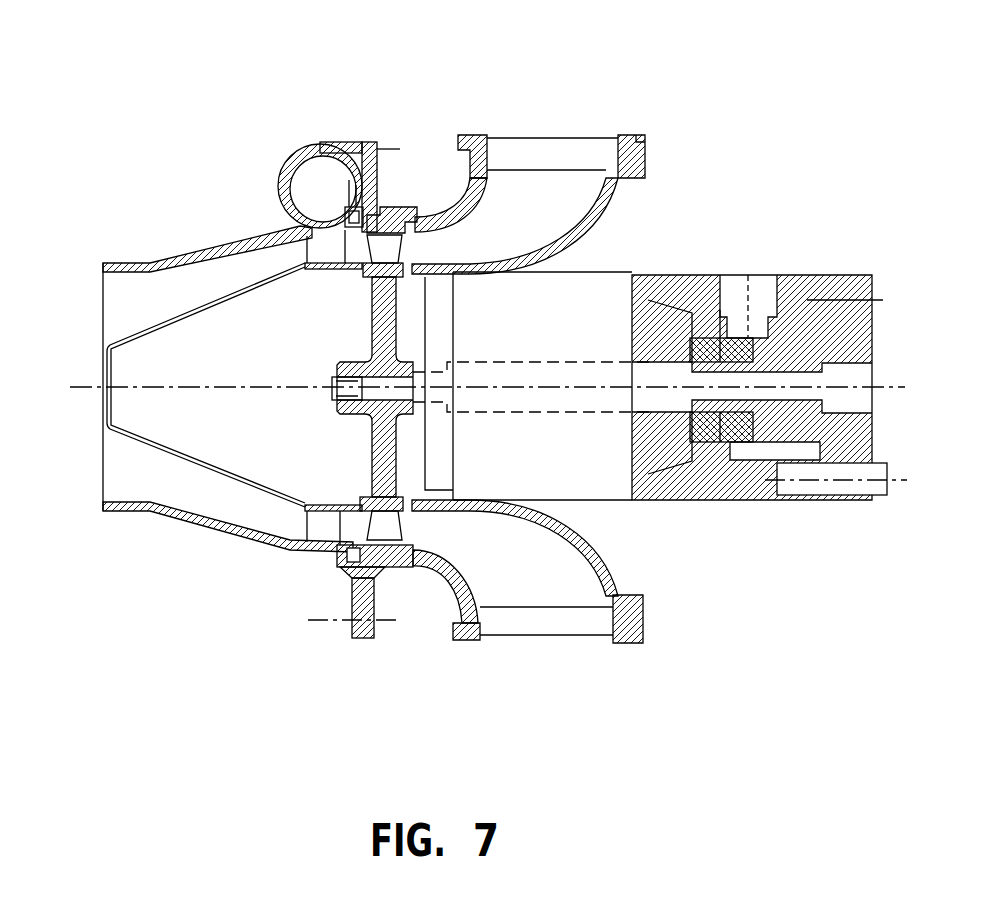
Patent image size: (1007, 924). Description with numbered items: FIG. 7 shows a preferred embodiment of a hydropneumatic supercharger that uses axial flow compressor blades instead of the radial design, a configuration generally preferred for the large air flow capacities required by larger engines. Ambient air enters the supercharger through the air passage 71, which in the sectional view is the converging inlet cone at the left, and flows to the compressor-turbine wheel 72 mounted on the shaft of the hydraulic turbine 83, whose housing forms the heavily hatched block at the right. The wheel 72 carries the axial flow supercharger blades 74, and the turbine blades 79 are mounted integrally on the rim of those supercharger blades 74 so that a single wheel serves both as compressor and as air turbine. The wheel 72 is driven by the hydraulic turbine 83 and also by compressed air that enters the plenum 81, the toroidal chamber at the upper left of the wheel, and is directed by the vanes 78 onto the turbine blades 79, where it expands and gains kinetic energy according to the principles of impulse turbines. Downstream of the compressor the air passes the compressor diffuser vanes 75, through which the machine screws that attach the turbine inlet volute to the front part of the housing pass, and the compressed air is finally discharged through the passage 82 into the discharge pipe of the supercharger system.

The air passage 71 is at (533, 185).
The compressor-turbine wheel 72 is at (382, 455).
The axial flow supercharger blades 74 is at (387, 527).
The compressor diffuser vanes 75 is at (325, 527).
The nozzle vanes 78 is at (367, 207).
The turbine blades 79 is at (362, 212).
The plenum 81 is at (313, 173).
The passage 82 is at (157, 293).
The hydraulic turbine 83 is at (707, 273).